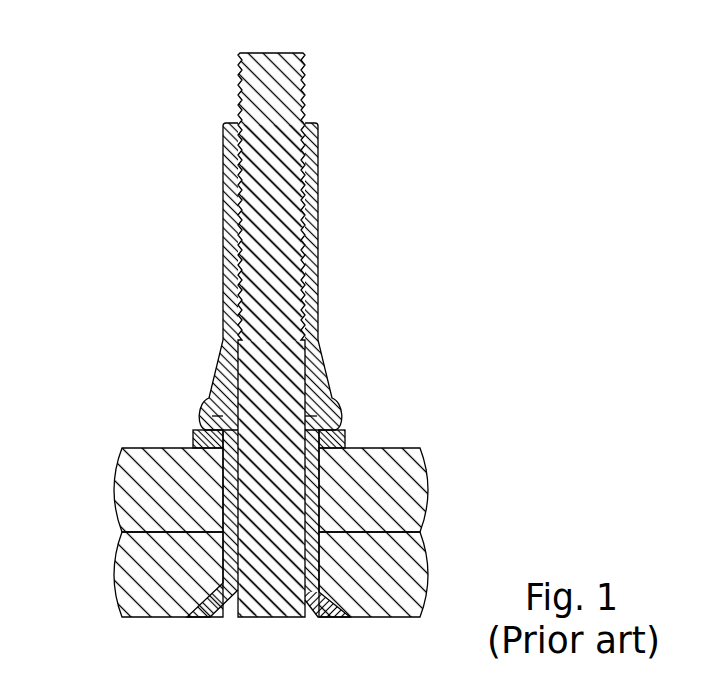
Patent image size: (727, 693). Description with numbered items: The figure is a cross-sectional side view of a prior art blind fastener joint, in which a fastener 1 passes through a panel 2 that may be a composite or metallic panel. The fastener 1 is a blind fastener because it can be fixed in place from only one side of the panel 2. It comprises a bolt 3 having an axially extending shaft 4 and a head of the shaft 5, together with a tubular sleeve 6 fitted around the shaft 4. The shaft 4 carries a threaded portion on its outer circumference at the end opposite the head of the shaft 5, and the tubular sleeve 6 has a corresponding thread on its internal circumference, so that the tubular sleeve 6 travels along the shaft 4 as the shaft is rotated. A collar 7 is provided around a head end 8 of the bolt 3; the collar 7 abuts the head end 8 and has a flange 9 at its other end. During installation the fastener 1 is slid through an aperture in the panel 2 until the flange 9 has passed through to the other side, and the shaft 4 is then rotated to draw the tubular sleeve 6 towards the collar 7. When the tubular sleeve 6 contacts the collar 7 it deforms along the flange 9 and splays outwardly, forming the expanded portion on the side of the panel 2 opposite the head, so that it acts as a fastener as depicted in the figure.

The fastener 1 is at (132, 223).
The panel 2 is at (398, 512).
The bolt 3 is at (313, 69).
The shaft 4 is at (263, 358).
The head of the shaft 5 is at (250, 513).
The tubular sleeve 6 is at (318, 270).
The collar 7 is at (313, 562).
The head end 8 is at (275, 607).
The flange 9 is at (317, 363).